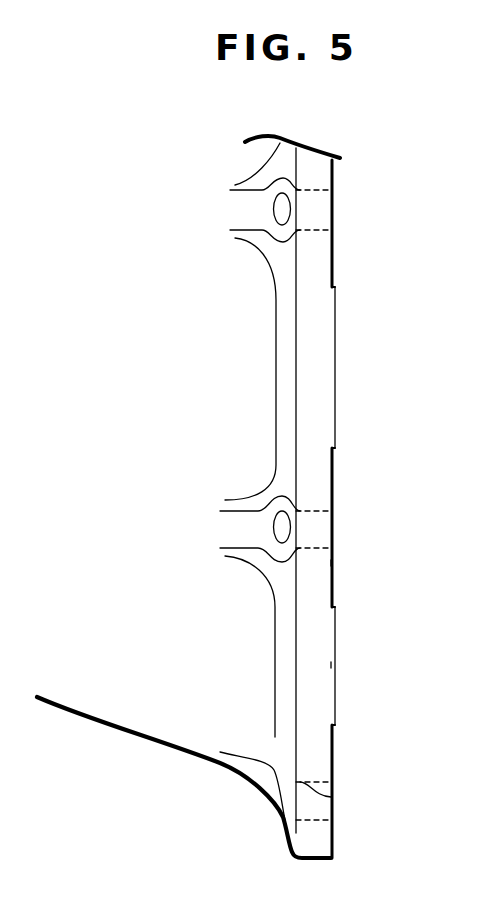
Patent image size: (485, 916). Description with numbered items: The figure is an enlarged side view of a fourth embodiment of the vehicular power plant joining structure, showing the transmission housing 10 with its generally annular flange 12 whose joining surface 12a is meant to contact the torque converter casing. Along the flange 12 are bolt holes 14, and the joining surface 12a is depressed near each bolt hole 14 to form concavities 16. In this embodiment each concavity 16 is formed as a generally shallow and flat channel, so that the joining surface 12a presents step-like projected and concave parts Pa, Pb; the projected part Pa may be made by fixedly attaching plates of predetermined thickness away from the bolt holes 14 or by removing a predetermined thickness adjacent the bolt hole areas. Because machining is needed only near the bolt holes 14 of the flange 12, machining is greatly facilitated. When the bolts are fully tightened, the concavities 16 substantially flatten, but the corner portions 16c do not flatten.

The transmission housing 10 is at (135, 733).
The flange 12 is at (312, 417).
The joining surface 12a is at (337, 353).
The bolt holes 14 is at (284, 210).
The concavities 16 is at (333, 255).
The corner portions 16c is at (333, 287).
The projected part Pa is at (333, 665).
The concave part Pb is at (332, 563).